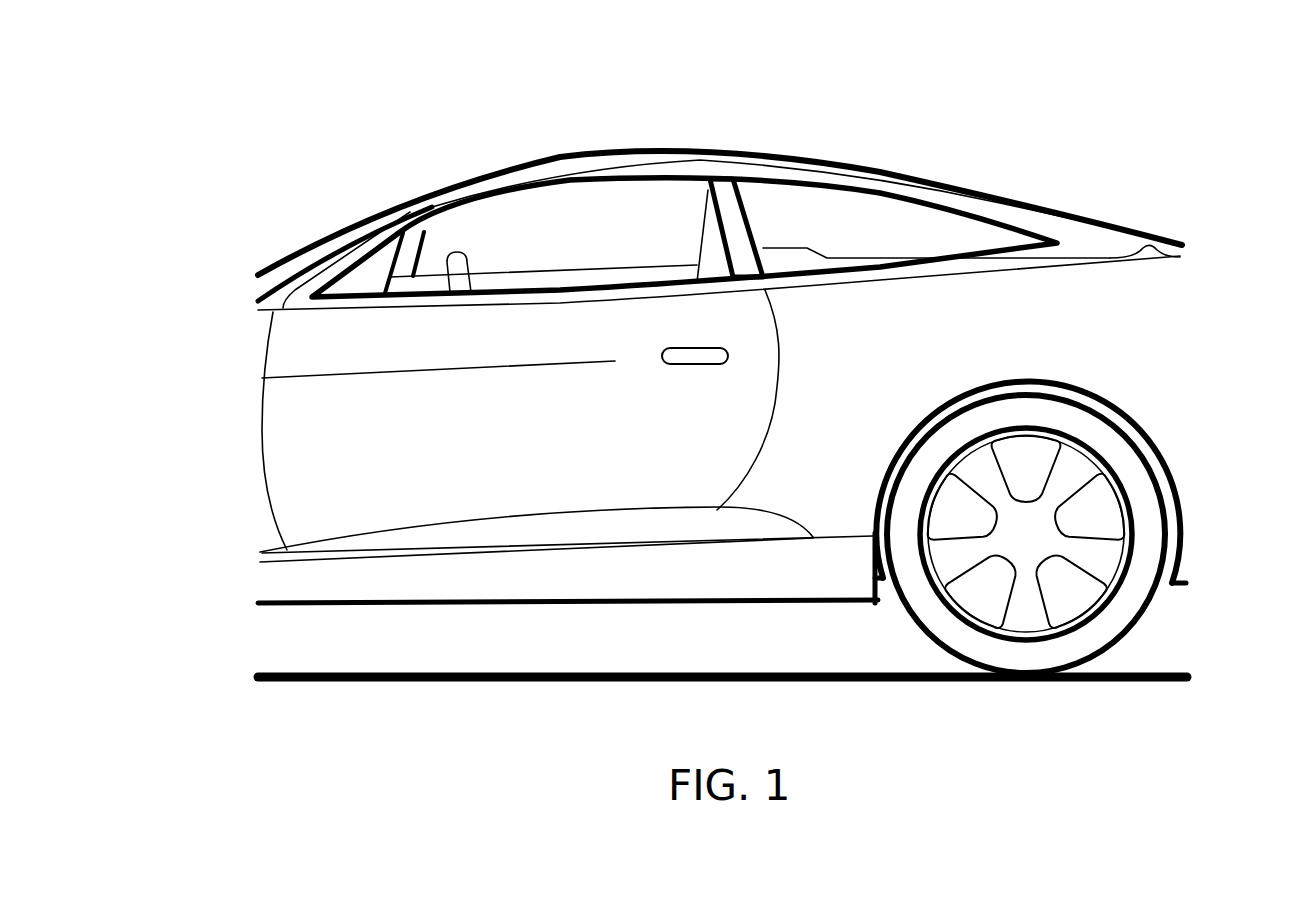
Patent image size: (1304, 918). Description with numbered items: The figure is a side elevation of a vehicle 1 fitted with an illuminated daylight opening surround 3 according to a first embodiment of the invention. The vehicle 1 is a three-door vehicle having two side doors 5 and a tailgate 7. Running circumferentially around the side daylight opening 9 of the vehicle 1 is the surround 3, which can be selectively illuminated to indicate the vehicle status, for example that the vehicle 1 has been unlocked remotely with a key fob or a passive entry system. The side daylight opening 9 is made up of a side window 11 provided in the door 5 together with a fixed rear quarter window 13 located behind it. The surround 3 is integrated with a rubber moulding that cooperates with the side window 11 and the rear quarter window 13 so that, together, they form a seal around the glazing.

The vehicle 1 is at (231, 161).
The illuminated daylight opening surround 3 is at (1082, 245).
The side door 5 is at (503, 479).
The tailgate 7 is at (990, 193).
The side daylight opening 9 is at (437, 293).
The side window 11 is at (503, 240).
The fixed rear quarter window 13 is at (868, 225).